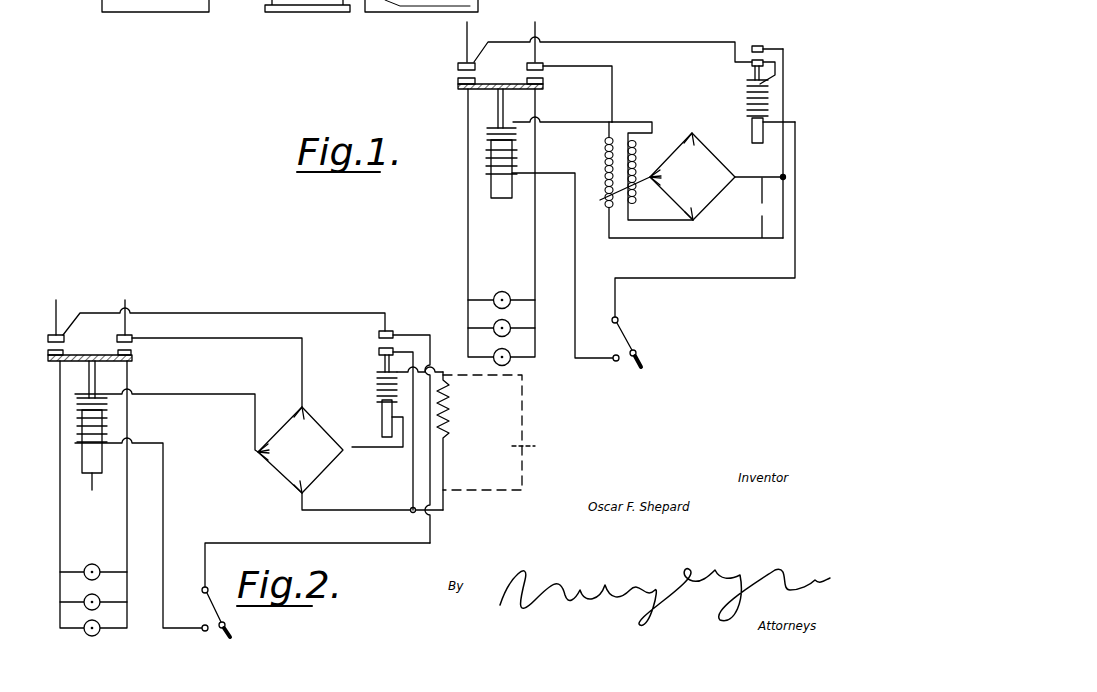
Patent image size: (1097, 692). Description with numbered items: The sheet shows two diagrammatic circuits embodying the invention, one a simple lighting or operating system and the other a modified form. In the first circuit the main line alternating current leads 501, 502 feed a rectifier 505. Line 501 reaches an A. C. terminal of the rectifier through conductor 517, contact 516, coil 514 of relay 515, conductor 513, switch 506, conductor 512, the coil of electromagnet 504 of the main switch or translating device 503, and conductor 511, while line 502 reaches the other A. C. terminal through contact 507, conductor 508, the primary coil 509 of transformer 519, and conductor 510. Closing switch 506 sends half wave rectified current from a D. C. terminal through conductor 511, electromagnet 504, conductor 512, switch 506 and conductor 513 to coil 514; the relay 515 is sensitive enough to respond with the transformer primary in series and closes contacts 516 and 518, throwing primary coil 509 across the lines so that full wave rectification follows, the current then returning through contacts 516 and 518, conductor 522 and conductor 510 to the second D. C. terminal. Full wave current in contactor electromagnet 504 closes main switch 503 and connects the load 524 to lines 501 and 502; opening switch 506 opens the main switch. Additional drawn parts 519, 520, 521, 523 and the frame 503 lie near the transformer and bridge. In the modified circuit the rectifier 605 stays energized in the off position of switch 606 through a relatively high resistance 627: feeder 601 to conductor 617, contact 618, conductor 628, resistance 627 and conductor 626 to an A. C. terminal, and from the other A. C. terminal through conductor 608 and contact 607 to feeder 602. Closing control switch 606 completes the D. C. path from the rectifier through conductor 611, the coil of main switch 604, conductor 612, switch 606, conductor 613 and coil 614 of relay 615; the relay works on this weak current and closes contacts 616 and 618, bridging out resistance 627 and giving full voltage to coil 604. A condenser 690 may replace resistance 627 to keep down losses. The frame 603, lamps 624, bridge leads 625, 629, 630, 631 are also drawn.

In FIG. 1, the main line alternating current lead 501 is at (463, 36).
In FIG. 1, the main line alternating current lead 502 is at (538, 36).
In FIG. 1, the main switch or translating device 503 is at (470, 92).
In FIG. 1, the electromagnet of main switch 504 is at (492, 196).
In FIG. 1, the rectifier 505 is at (688, 178).
In FIG. 1, the switch 506 is at (626, 335).
In FIG. 1, the contact 507 is at (541, 65).
In FIG. 1, the conductor 508 is at (614, 95).
In FIG. 1, the primary coil of transformer 509 is at (606, 139).
In FIG. 1, the conductor 510 is at (672, 239).
In FIG. 1, the conductor 511 is at (652, 127).
In FIG. 1, the conductor 512 is at (588, 360).
In FIG. 1, the conductor 513 is at (667, 279).
In FIG. 1, the coil of relay 514 is at (750, 99).
In FIG. 1, the relay 515 is at (751, 137).
In FIG. 1, the contact 516 is at (751, 65).
In FIG. 1, the conductor 517 is at (735, 41).
In FIG. 1, the contact 518 is at (765, 47).
In FIG. 1, the transformer 519 is at (609, 191).
In FIG. 1, the secondary winding lead 520 is at (633, 208).
In FIG. 1, the conductor 521 is at (672, 228).
In FIG. 1, the conductor 522 is at (786, 100).
In FIG. 1, the conductor 523 is at (688, 138).
In FIG. 1, the load 524 is at (493, 354).
In FIG. 2, the feeder 601 is at (58, 306).
In FIG. 2, the feeder 602 is at (128, 305).
In FIG. 2, the relay frame 603 is at (90, 489).
In FIG. 2, the main switch coil 604 is at (92, 437).
In FIG. 2, the rectifier 605 is at (288, 451).
In FIG. 2, the control switch 606 is at (203, 609).
In FIG. 2, the contact 607 is at (133, 337).
In FIG. 2, the conductor 608 is at (239, 338).
In FIG. 2, the conductor 611 is at (200, 393).
In FIG. 2, the conductor 612 is at (165, 505).
In FIG. 2, the conductor 613 is at (373, 545).
In FIG. 2, the relay coil 614 is at (375, 391).
In FIG. 2, the relay 615 is at (380, 427).
In FIG. 2, the contact 616 is at (378, 349).
In FIG. 2, the conductor 617 is at (330, 312).
In FIG. 2, the contact 618 is at (392, 330).
In FIG. 2, the signal lamps 624 is at (99, 626).
In FIG. 2, the conductor 625 is at (360, 456).
In FIG. 2, the conductor 626 is at (341, 512).
In FIG. 2, the resistance 627 is at (447, 435).
In FIG. 2, the conductor 628 is at (428, 335).
In FIG. 2, the junction 629 is at (411, 488).
In FIG. 2, the conductor 630 is at (270, 464).
In FIG. 2, the conductor 631 is at (282, 422).
In FIG. 2, the condenser 690 is at (523, 458).